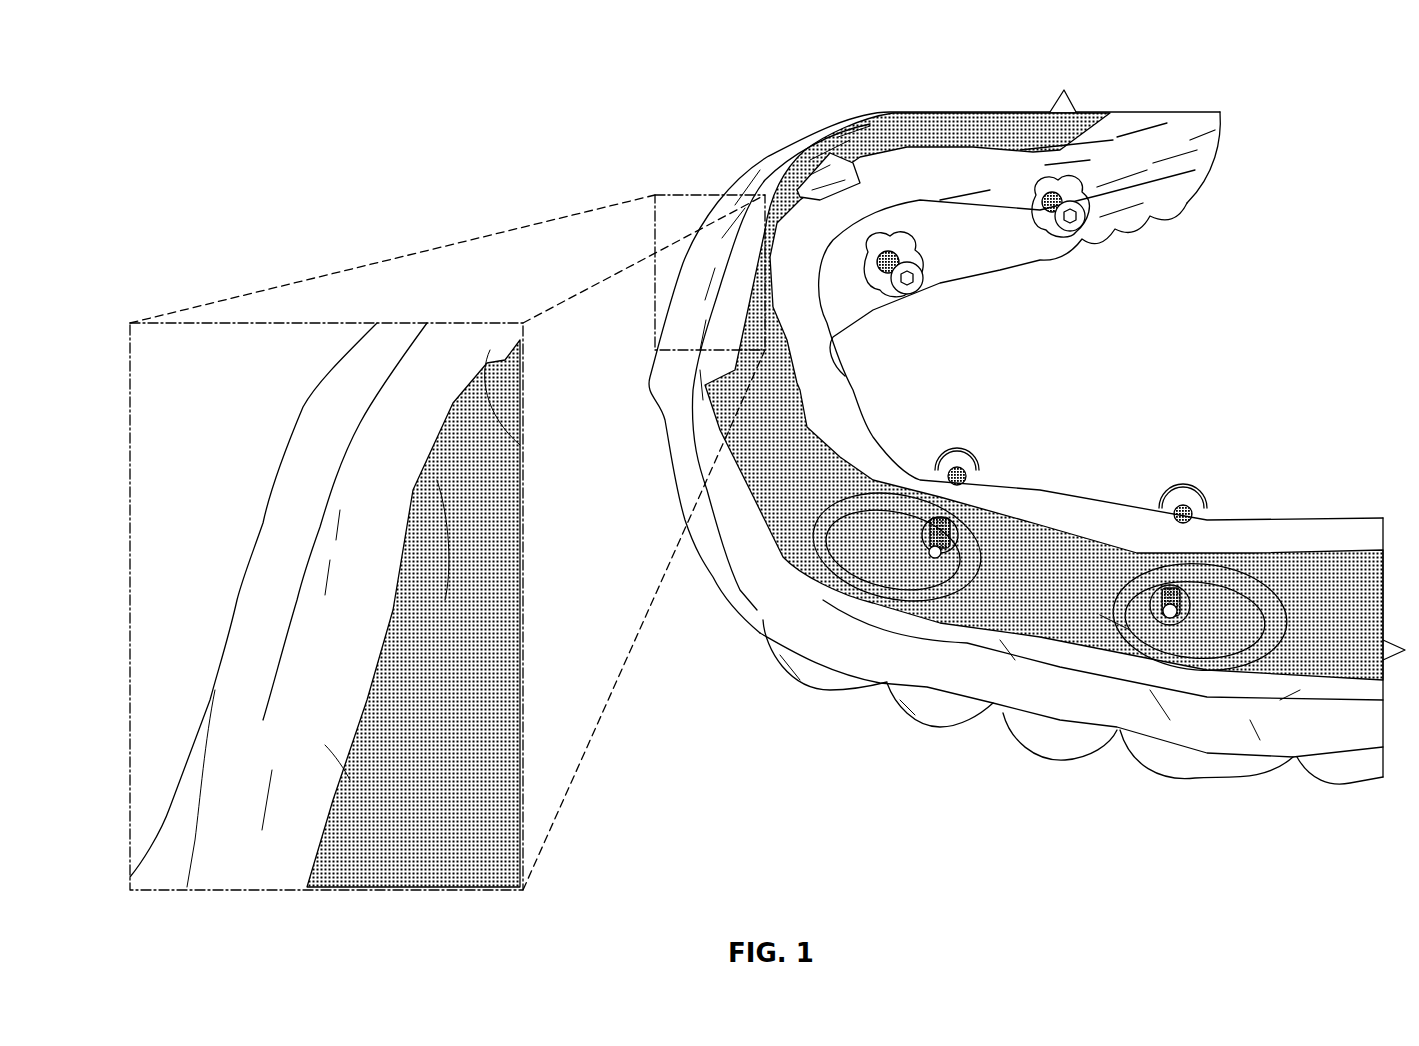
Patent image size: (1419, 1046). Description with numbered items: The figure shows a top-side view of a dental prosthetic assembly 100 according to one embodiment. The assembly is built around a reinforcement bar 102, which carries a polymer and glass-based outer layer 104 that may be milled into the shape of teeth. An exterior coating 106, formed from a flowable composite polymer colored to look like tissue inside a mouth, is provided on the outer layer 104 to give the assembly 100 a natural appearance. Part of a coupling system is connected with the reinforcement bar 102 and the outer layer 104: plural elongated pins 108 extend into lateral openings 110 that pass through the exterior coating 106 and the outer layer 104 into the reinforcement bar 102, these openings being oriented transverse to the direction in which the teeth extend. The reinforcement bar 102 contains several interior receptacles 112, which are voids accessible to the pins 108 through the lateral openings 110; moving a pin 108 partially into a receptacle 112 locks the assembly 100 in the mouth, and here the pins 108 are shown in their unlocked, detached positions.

The dental prosthetic assembly 100 is at (1243, 74).
The reinforcement bar 102 is at (1052, 585).
The polymer and glass-based outer layer 104 is at (335, 617).
The exterior coating 106 is at (293, 540).
The elongated pins 108 is at (1075, 232).
The lateral openings 110 is at (897, 242).
The interior receptacles 112 is at (813, 189).